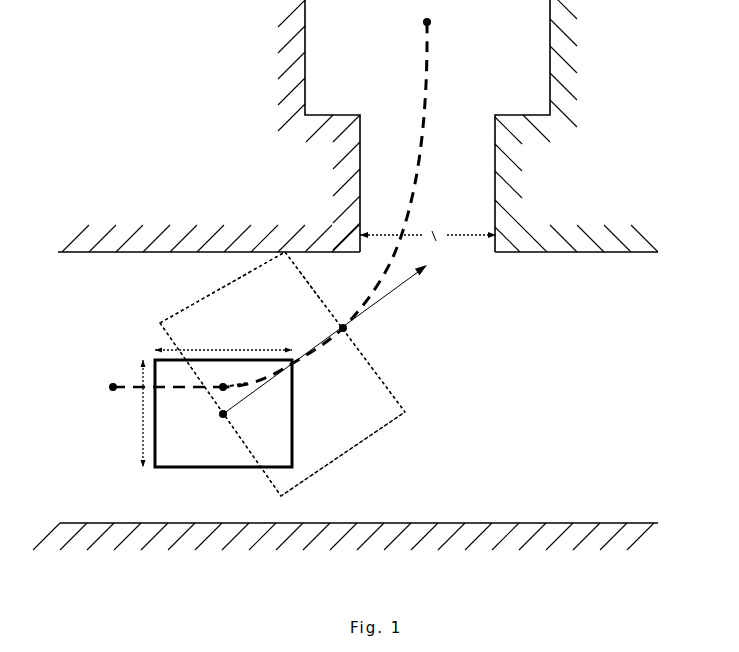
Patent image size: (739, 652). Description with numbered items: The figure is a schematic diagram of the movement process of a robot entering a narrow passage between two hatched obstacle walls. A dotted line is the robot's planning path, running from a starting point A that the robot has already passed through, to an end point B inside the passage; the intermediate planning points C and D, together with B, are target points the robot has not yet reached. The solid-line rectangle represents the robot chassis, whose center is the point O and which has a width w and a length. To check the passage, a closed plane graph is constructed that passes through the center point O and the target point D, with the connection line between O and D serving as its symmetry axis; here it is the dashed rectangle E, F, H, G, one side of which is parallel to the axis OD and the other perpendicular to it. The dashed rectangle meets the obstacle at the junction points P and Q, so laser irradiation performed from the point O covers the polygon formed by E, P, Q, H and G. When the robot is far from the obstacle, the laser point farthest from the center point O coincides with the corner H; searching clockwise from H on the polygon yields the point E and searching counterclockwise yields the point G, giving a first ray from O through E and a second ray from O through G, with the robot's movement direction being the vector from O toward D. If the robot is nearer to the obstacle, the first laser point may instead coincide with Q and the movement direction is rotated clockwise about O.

The starting point of the planning path A is at (107, 387).
The end point of the planning path B is at (419, 23).
The planning point C is at (225, 377).
The target point D is at (334, 328).
The center point of the robot chassis O is at (215, 421).
The corner of the dashed rectangle E is at (211, 292).
The corner of the dashed rectangle F is at (339, 332).
The corner of the dashed rectangle G is at (220, 419).
The corner of the dashed rectangle H is at (351, 453).
The junction point P is at (234, 273).
The junction point Q is at (311, 279).
The width of the robot chassis w is at (139, 413).